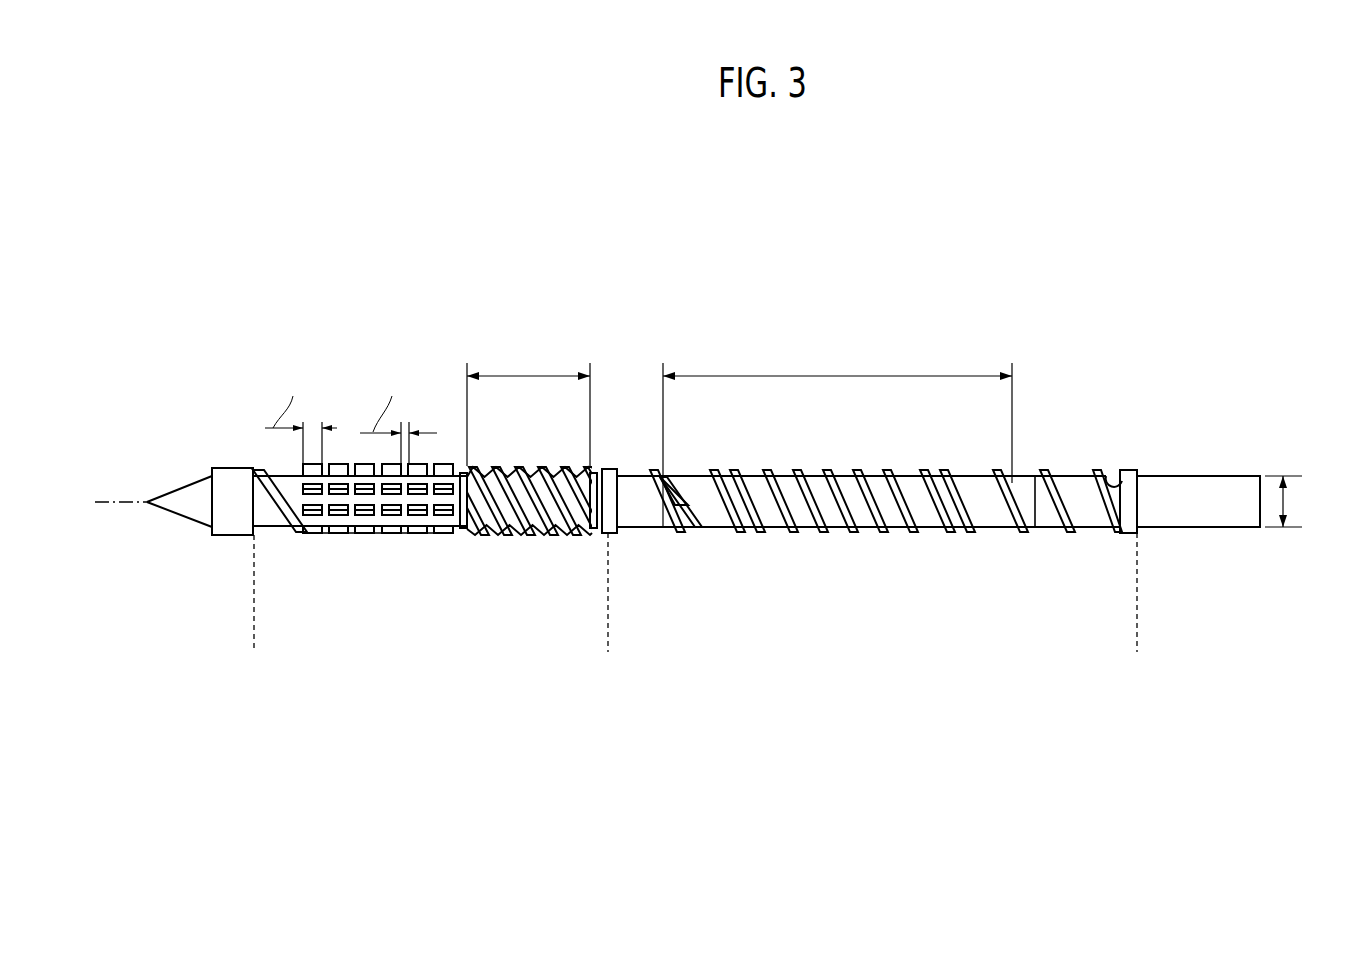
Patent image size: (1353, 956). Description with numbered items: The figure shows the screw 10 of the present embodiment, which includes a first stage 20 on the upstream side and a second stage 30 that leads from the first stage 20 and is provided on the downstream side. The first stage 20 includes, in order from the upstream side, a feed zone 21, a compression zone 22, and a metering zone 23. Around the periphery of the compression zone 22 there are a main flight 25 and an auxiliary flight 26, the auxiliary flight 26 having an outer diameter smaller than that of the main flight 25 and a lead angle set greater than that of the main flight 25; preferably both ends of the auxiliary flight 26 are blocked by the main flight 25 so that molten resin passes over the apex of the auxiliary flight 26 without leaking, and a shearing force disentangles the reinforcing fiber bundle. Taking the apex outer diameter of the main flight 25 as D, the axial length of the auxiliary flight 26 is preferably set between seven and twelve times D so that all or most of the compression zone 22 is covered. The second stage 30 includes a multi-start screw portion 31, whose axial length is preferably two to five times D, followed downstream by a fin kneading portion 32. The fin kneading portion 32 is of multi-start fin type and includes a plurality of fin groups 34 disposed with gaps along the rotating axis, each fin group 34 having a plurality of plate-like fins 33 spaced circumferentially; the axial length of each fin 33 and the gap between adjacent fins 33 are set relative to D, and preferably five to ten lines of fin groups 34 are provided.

The screw 10 is at (738, 461).
The first stage 20 is at (1137, 645).
The feed zone 21 is at (1002, 528).
The compression zone 22 is at (812, 528).
The metering zone 23 is at (640, 528).
The main flight 25 is at (837, 477).
The auxiliary flight 26 is at (910, 494).
The second stage 30 is at (608, 645).
The multi-start screw portion 31 is at (532, 529).
The fin kneading portion 32 is at (378, 532).
The fin 33 is at (337, 461).
The fin group 34 is at (338, 533).